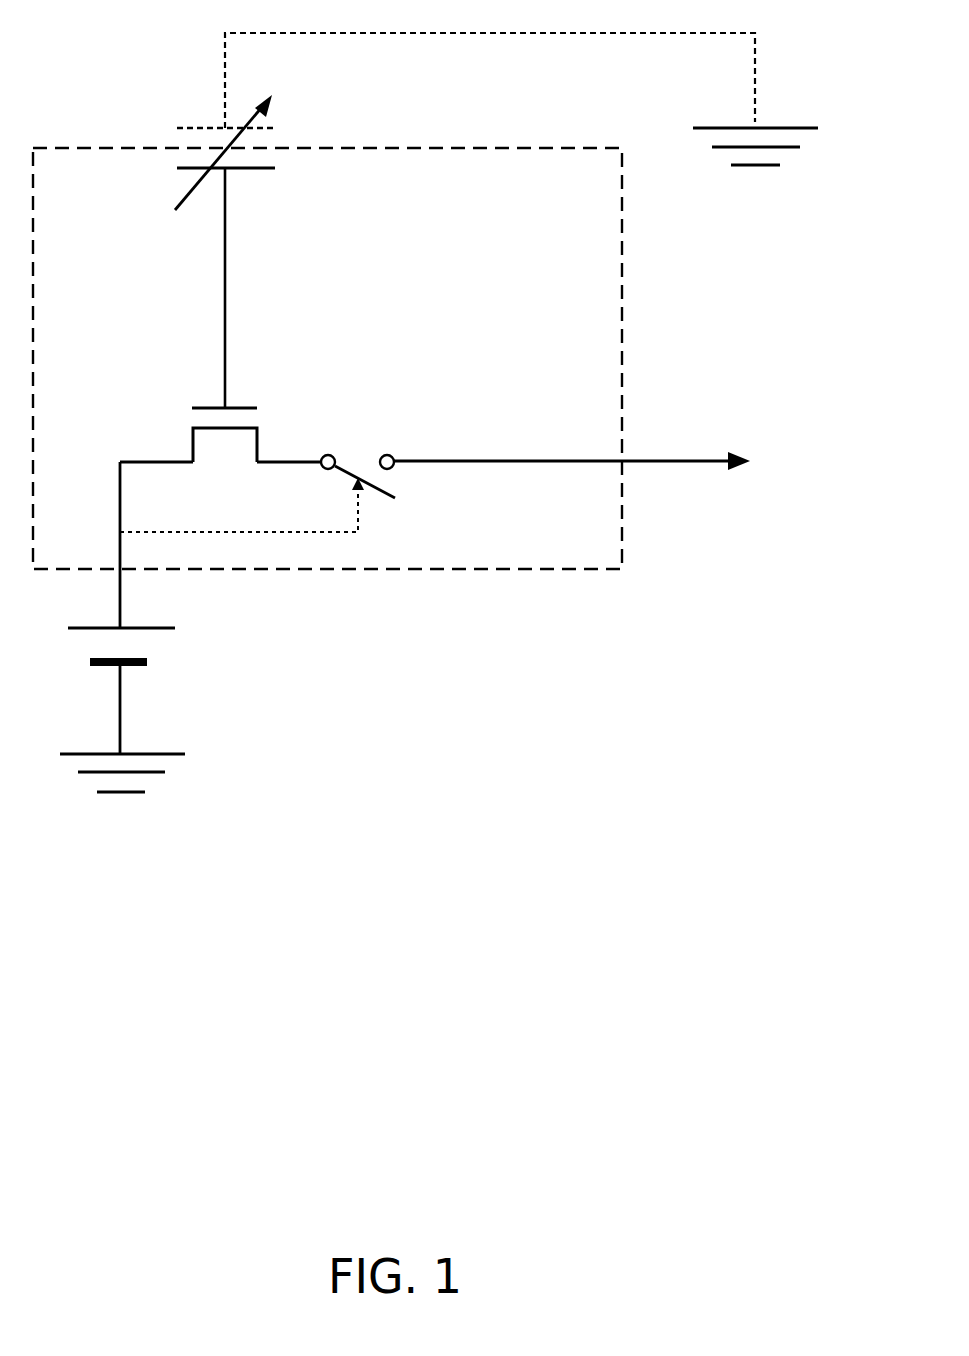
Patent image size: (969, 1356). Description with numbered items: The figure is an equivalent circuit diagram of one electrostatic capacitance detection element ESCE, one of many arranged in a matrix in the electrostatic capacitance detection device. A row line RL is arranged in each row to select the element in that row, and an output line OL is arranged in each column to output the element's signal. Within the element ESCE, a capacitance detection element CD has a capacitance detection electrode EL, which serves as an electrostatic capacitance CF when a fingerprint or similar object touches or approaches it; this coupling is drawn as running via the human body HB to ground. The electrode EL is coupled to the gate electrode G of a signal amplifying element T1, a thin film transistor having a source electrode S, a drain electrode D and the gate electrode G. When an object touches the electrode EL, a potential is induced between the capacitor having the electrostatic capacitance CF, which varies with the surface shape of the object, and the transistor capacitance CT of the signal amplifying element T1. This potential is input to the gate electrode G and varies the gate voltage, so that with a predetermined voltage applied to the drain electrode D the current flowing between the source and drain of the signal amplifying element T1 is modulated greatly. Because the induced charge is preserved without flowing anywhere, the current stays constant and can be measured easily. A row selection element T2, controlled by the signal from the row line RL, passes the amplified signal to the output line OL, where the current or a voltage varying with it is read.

The via human body coupling path HB is at (490, 67).
The electrostatic capacitance detection element ESCE is at (387, 569).
The electrostatic capacitance CF is at (202, 152).
The capacitance detection element CD is at (292, 159).
The capacitance detection electrode EL is at (240, 170).
The signal amplifying element T1 is at (248, 408).
The transistor capacitance CT is at (159, 408).
The gate electrode G is at (208, 394).
The source electrode S is at (172, 449).
The drain electrode D is at (275, 449).
The row selection element T2 is at (364, 452).
The output line OL is at (682, 460).
The row line RL is at (120, 590).